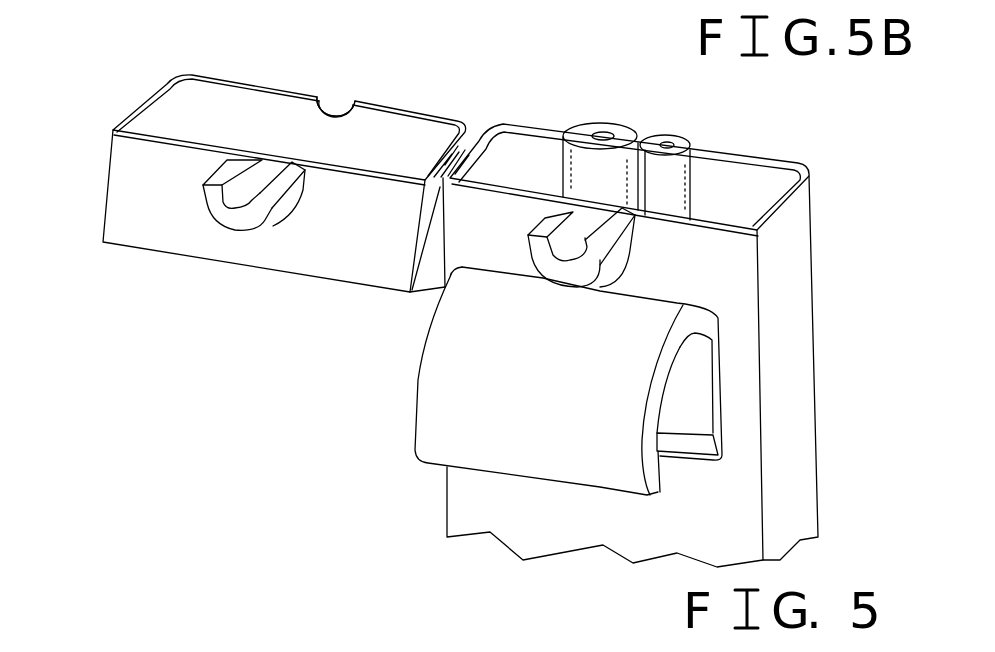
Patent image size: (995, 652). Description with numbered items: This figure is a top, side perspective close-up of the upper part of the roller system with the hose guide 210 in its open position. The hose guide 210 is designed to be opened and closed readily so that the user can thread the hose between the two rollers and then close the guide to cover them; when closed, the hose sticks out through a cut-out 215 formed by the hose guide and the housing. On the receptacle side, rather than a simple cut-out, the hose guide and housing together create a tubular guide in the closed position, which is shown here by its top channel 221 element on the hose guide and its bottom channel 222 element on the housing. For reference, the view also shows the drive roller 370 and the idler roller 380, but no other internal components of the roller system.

The hose guide 210 is at (150, 190).
The cut-out 215 is at (340, 90).
The top channel 221 is at (236, 224).
The bottom channel 222 is at (537, 209).
The drive roller 370 is at (634, 112).
The idler roller 380 is at (702, 133).